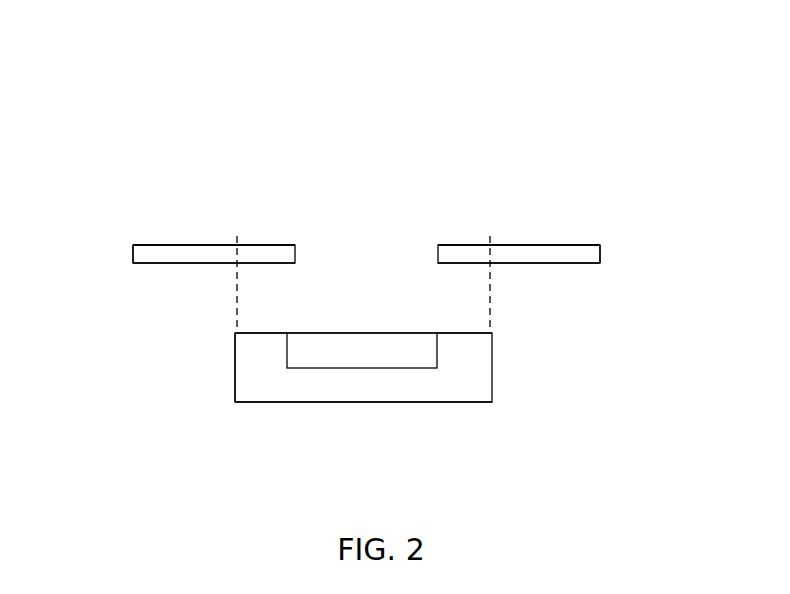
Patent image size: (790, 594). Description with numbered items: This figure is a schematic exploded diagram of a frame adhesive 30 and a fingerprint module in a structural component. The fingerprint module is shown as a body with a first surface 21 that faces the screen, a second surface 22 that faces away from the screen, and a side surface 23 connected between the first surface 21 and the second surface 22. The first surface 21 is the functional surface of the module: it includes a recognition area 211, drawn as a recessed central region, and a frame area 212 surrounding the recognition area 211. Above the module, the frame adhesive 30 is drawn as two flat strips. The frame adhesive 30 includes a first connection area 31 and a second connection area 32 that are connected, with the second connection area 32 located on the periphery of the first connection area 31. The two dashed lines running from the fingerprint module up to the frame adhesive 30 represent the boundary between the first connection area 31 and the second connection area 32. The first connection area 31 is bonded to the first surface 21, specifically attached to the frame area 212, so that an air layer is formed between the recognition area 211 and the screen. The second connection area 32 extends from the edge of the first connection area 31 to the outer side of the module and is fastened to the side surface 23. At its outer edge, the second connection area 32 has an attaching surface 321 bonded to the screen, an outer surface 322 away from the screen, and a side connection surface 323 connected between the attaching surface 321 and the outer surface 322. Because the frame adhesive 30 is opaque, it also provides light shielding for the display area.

The first surface 21 is at (363, 209).
The recognition area 211 is at (354, 320).
The frame area 212 is at (278, 320).
The second surface 22 is at (255, 415).
The side surface 23 is at (223, 379).
The frame adhesive 30 is at (366, 201).
The first connection area 31 is at (265, 254).
The second connection area 32 is at (187, 255).
The attaching surface 321 is at (142, 232).
The outer surface 322 is at (147, 278).
The side connection surface 323 is at (120, 256).